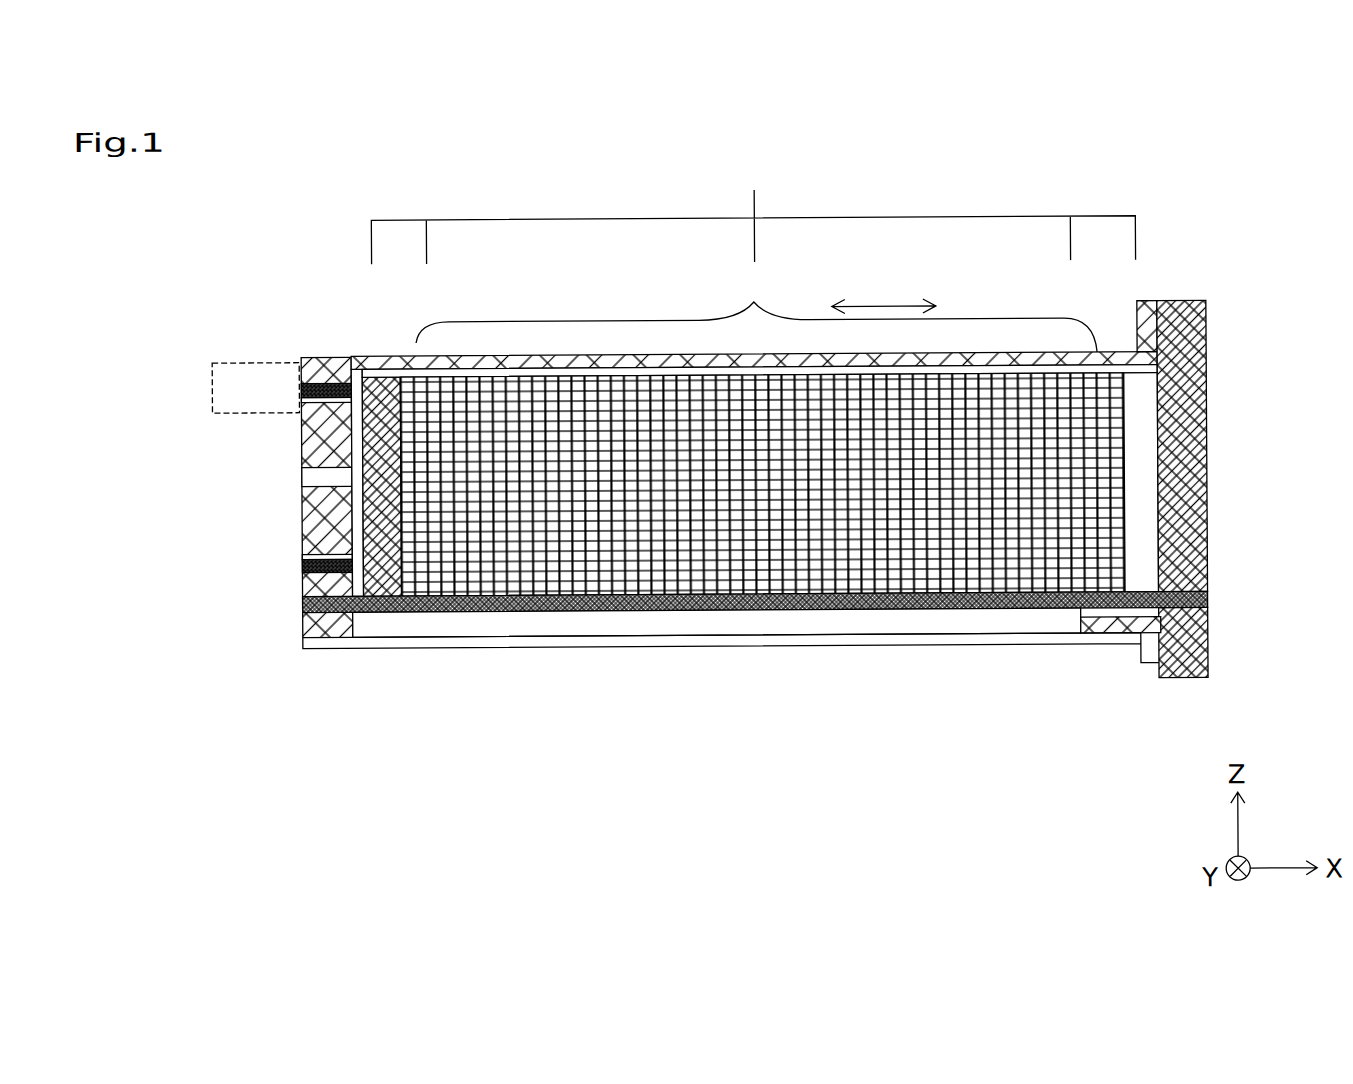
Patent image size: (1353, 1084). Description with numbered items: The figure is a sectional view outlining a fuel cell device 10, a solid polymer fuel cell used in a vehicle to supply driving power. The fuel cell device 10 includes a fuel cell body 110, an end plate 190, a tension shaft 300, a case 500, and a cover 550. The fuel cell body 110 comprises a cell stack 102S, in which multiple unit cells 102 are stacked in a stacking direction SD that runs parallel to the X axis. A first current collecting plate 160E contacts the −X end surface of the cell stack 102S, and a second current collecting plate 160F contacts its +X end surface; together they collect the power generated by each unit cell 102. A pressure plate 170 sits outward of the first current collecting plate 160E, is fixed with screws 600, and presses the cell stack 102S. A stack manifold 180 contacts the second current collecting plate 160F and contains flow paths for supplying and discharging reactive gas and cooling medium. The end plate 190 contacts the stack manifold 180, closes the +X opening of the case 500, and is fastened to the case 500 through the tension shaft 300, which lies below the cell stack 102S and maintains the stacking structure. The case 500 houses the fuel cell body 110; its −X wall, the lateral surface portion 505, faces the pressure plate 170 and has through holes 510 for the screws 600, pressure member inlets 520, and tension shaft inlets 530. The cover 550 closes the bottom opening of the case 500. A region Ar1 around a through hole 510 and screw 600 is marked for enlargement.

The fuel cell device 10 is at (268, 227).
The fuel cell body 110 is at (753, 212).
The unit cell 102 is at (758, 375).
The cell stack 102S is at (755, 303).
The first current collecting plate 160E is at (400, 376).
The second current collecting plate 160F is at (1140, 355).
The pressure plate 170 is at (358, 367).
The stack manifold 180 is at (1138, 339).
The end plate 190 is at (1208, 468).
The tension shaft 300 is at (682, 611).
The case 500 is at (965, 354).
The lateral surface portion 505 is at (315, 354).
The through hole 510 is at (302, 385).
The pressure member inlet 520 is at (302, 475).
The tension shaft inlet 530 is at (302, 600).
The cover 550 is at (870, 646).
The screw 600 is at (330, 399).
The region Ar1 is at (213, 374).
The stacking direction SD is at (884, 293).